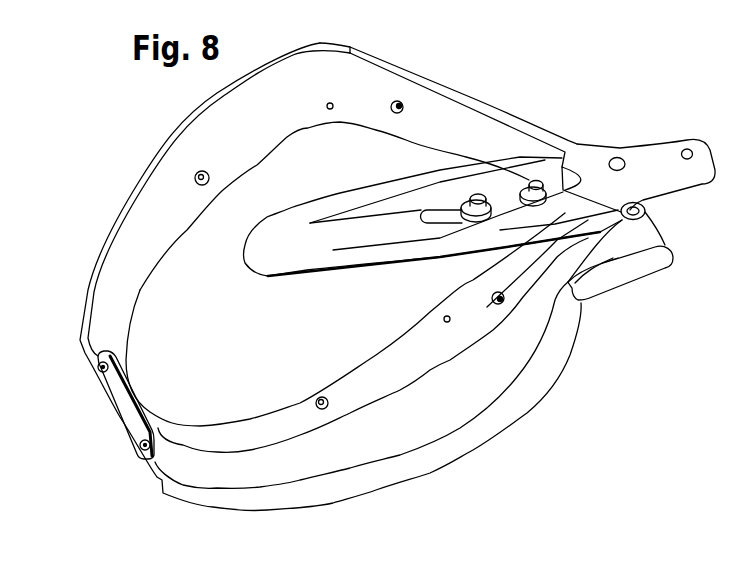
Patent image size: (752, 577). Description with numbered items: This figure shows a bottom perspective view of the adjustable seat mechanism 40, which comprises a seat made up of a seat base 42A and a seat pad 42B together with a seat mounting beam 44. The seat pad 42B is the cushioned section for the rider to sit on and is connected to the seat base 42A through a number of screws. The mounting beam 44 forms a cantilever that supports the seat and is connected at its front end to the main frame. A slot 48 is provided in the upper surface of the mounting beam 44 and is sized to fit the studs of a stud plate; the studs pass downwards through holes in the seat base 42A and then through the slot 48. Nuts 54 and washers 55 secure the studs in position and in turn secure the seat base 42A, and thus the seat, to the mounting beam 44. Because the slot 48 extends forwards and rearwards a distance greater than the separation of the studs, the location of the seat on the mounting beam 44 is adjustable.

The seat mechanism 40 is at (86, 198).
The seat base 42A is at (404, 468).
The seat pad 42B is at (458, 380).
The seat mounting beam 44 is at (572, 166).
The slot 48 is at (436, 212).
The nuts 54 is at (569, 93).
The washers 55 is at (548, 410).